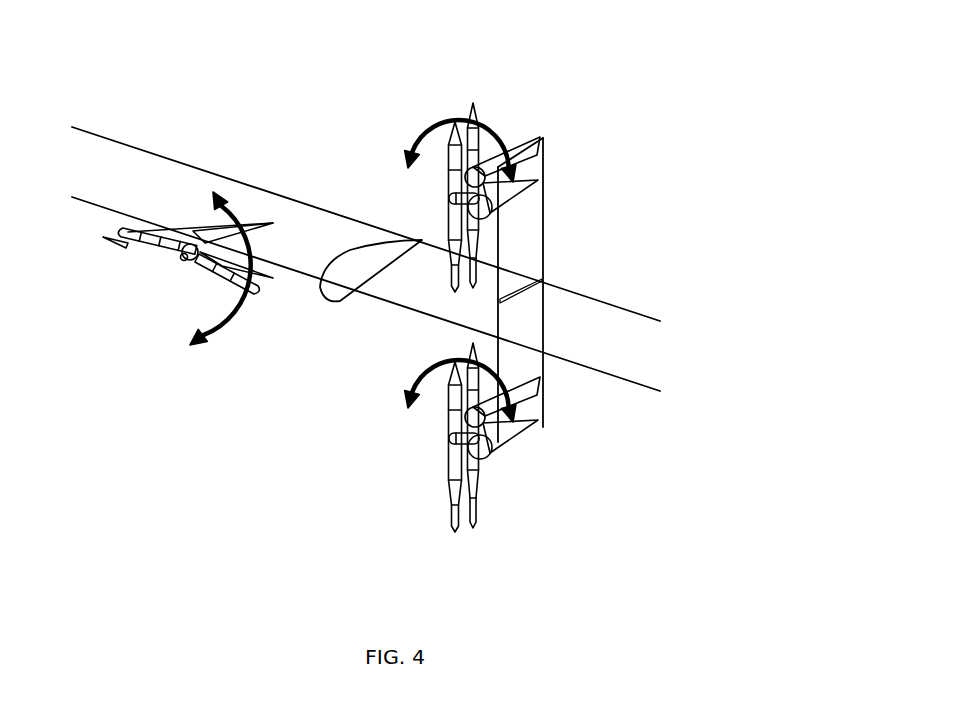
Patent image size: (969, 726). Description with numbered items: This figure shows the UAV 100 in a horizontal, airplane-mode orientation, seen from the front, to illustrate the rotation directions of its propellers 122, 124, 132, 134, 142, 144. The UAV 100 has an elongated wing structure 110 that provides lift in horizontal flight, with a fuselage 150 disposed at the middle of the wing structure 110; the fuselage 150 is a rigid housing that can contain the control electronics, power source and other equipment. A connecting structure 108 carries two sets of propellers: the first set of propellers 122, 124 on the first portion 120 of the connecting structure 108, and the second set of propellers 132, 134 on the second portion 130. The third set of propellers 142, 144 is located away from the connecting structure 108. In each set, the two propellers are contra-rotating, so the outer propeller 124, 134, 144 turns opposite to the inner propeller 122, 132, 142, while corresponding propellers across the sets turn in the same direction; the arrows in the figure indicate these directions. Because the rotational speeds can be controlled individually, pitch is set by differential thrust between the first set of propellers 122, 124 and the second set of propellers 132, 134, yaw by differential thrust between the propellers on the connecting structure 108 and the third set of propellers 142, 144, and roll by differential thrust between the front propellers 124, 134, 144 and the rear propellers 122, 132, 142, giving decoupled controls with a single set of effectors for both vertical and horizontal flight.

The UAV 100 is at (622, 73).
The connecting structure 108 is at (536, 360).
The elongated wing structure 110 is at (103, 152).
The first portion of the connecting structure 120 is at (528, 203).
The inner propeller of first set 122 is at (475, 138).
The outer propeller of first set 124 is at (458, 150).
The second portion of the connecting structure 130 is at (533, 395).
The inner propeller of second set 132 is at (477, 492).
The outer propeller of second set 134 is at (448, 490).
The inner propeller of third set 142 is at (260, 281).
The outer propeller of third set 144 is at (207, 276).
The fuselage 150 is at (352, 272).